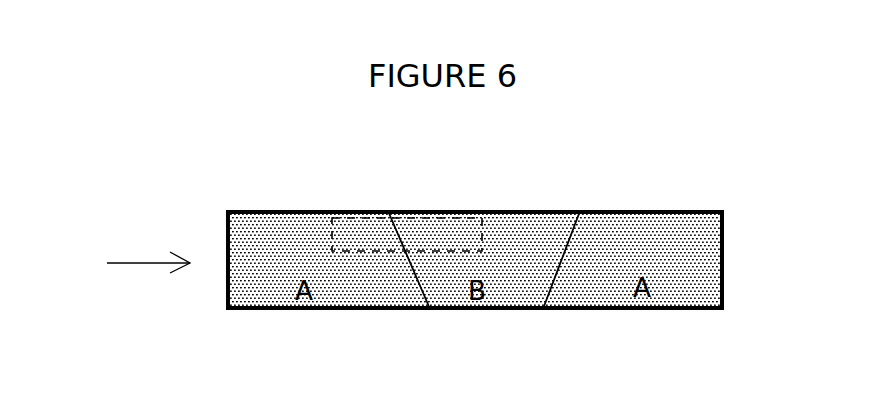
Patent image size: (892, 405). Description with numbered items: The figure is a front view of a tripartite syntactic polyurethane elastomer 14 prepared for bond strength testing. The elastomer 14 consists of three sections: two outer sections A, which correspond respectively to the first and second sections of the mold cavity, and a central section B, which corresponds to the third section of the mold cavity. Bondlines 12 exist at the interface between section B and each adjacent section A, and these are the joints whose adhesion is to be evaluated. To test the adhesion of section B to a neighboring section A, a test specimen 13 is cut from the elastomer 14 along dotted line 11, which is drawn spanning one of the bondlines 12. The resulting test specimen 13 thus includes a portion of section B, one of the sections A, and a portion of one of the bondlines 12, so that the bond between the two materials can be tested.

The dotted line 11 is at (325, 238).
The bondlines 12 is at (418, 283).
The test specimen 13 is at (442, 235).
The syntactic polyurethane elastomer 14 is at (127, 263).